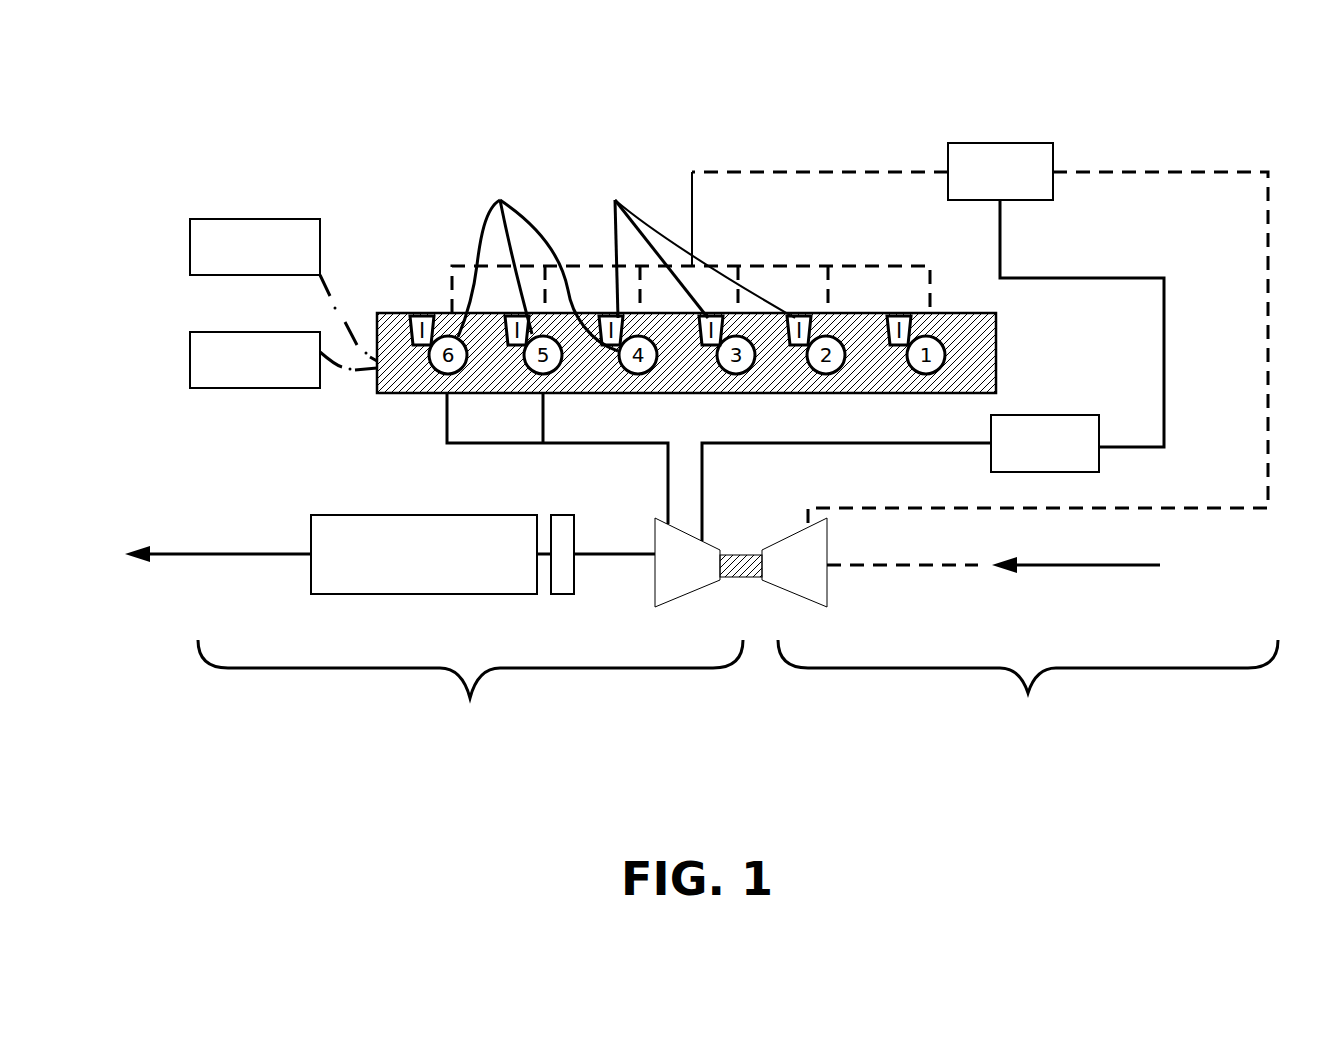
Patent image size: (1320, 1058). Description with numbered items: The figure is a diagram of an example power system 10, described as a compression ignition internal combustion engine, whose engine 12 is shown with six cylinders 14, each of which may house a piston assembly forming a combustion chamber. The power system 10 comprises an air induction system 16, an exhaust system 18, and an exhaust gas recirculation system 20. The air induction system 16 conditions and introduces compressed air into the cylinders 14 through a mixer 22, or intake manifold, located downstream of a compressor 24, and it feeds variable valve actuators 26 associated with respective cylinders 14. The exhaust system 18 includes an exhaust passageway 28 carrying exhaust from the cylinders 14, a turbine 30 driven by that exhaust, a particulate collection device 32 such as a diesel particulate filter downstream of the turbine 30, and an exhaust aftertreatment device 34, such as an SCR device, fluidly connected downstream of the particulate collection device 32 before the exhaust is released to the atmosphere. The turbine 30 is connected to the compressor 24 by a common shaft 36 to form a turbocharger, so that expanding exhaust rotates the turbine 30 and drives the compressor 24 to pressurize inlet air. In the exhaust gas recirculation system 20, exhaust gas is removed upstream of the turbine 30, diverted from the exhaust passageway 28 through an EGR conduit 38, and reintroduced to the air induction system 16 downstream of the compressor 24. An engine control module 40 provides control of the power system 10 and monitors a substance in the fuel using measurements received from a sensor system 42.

The power system 10 is at (385, 140).
The engine 12 is at (388, 320).
The cylinders 14 is at (538, 258).
The air induction system 16 is at (1028, 686).
The exhaust system 18 is at (470, 686).
The exhaust gas recirculation (EGR) system 20 is at (1060, 415).
The mixer 22 is at (1011, 143).
The compressor 24 is at (827, 585).
The variable valve actuators 26 is at (691, 242).
The exhaust passageway 28 is at (668, 487).
The turbine 30 is at (655, 585).
The particulate collection device 32 is at (565, 585).
The exhaust aftertreatment device 34 is at (360, 515).
The common shaft 36 is at (745, 555).
The EGR conduit 38 is at (960, 445).
The engine control module (ECM) 40 is at (283, 360).
The sensor system 42 is at (283, 290).